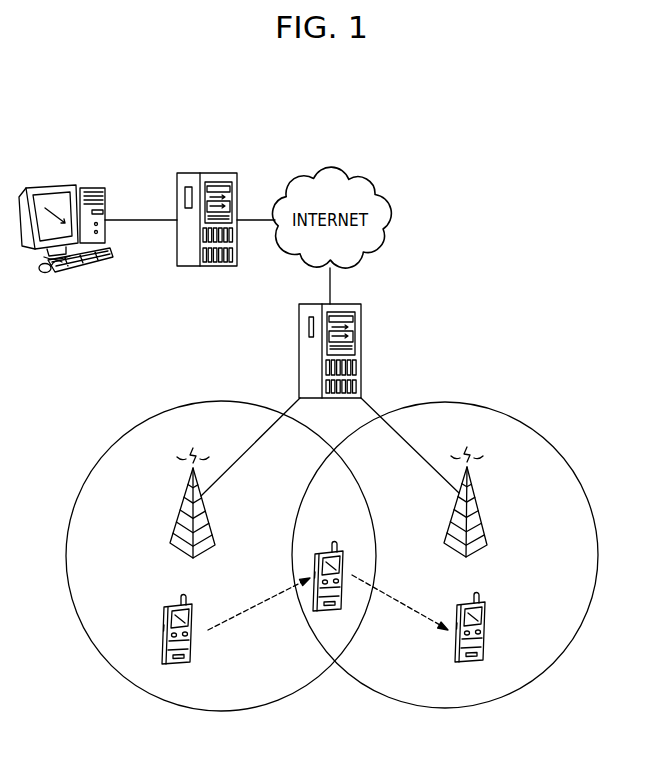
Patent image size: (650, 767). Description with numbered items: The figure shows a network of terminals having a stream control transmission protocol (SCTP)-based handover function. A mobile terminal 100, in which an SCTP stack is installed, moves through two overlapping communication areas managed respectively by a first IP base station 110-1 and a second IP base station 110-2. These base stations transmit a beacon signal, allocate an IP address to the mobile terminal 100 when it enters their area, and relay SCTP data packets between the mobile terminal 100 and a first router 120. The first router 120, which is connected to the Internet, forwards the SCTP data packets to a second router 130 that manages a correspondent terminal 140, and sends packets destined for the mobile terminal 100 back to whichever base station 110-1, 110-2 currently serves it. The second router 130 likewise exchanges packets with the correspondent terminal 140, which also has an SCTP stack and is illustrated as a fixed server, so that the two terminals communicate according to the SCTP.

The mobile terminal 100 is at (160, 625).
The first IP base station 110-1 is at (180, 507).
The second IP base station 110-2 is at (482, 506).
The first router 120 is at (363, 350).
The second router 130 is at (207, 173).
The correspondent terminal 140 is at (65, 185).